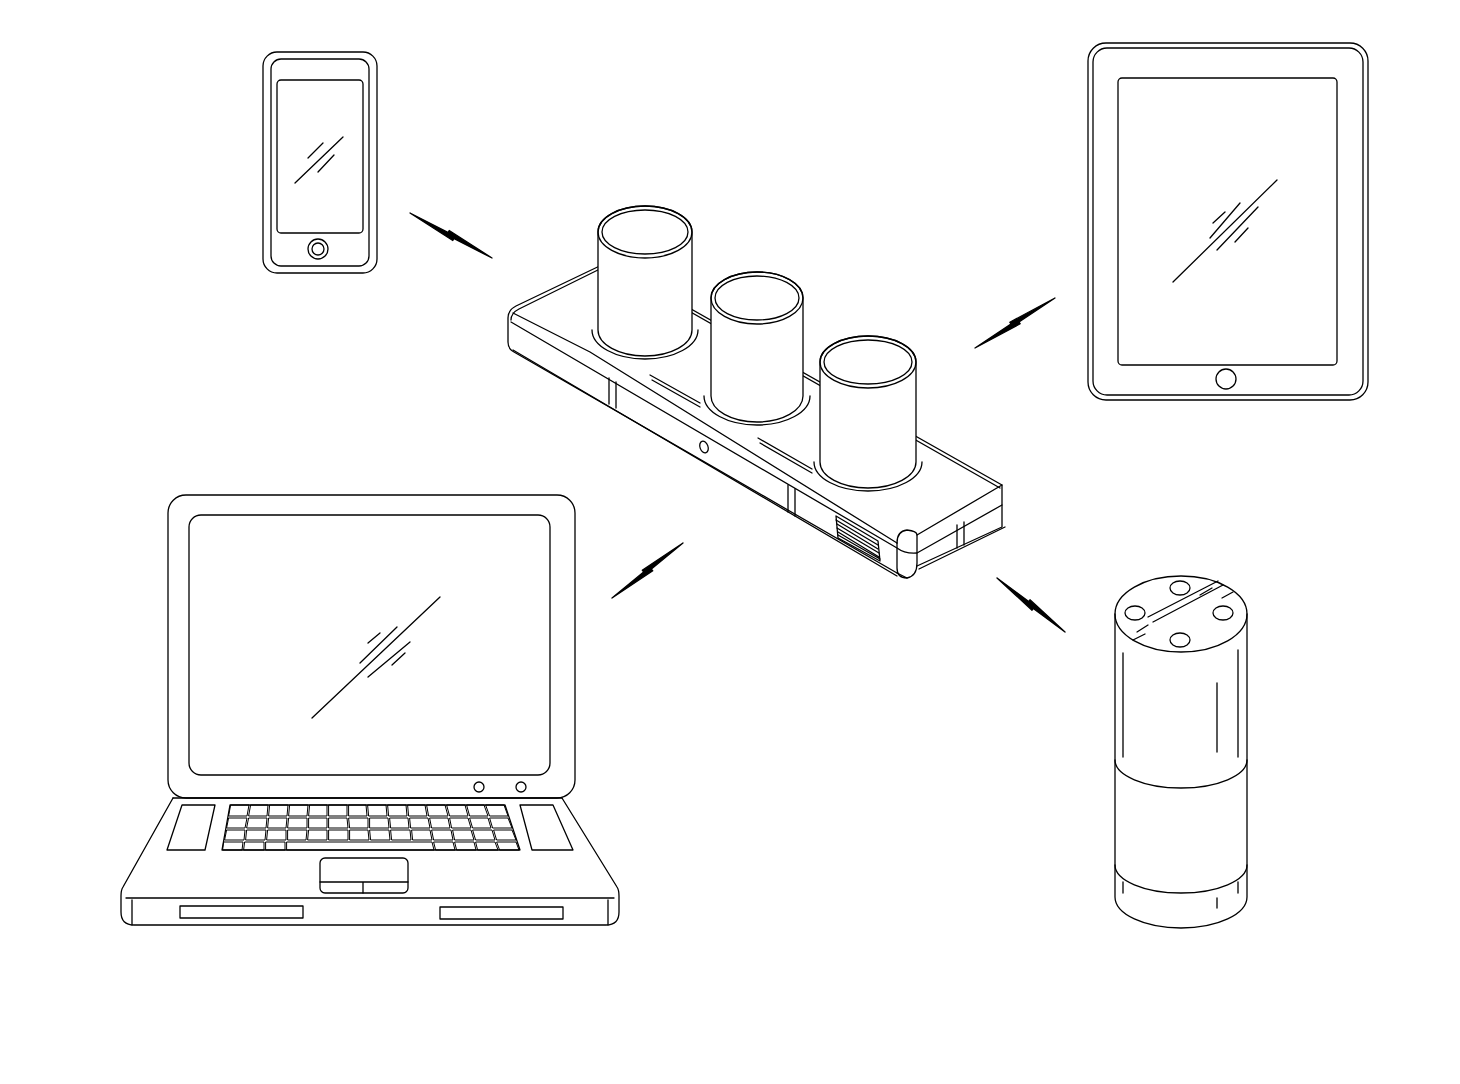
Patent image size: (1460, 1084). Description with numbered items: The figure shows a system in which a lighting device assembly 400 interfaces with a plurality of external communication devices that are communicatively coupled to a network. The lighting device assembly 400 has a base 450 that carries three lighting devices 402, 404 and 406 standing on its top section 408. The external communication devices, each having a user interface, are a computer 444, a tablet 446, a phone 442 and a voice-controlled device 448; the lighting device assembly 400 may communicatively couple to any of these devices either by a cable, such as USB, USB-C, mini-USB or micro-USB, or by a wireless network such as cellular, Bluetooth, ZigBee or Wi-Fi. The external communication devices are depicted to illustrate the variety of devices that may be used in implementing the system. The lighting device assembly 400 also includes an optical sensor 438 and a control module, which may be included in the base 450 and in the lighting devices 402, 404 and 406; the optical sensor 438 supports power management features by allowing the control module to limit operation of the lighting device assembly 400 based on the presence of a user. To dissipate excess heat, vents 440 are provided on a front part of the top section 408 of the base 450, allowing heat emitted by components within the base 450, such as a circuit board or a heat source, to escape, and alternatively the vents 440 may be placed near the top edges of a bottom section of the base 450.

The lighting device assembly 400 is at (753, 200).
The lighting device 402 is at (620, 209).
The lighting device 404 is at (775, 270).
The lighting device 406 is at (913, 318).
The top section 408 is at (577, 284).
The optical sensor 438 is at (699, 454).
The vents 440 is at (855, 548).
The phone 442 is at (263, 163).
The computer 444 is at (168, 643).
The tablet 446 is at (1368, 223).
The voice-controlled device 448 is at (1247, 740).
The base 450 is at (969, 439).